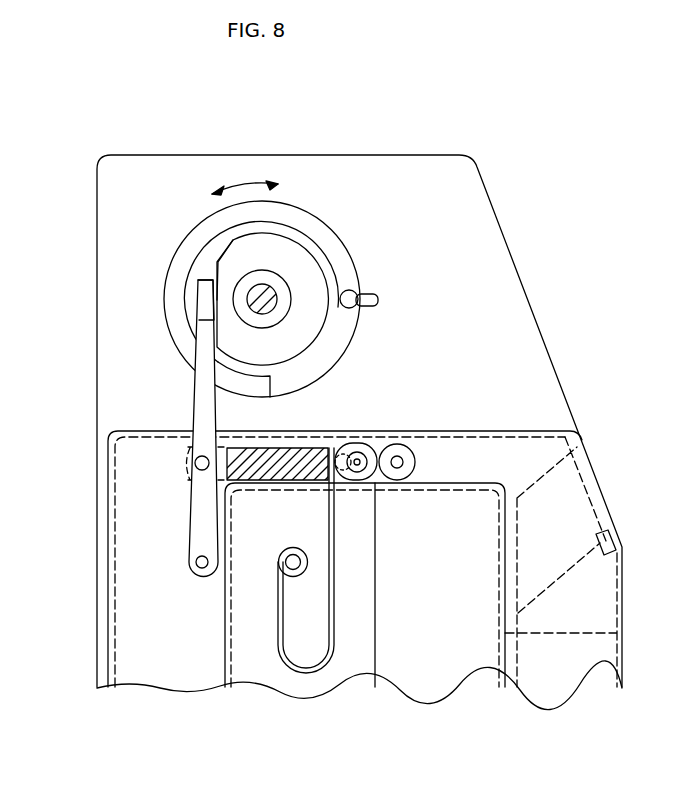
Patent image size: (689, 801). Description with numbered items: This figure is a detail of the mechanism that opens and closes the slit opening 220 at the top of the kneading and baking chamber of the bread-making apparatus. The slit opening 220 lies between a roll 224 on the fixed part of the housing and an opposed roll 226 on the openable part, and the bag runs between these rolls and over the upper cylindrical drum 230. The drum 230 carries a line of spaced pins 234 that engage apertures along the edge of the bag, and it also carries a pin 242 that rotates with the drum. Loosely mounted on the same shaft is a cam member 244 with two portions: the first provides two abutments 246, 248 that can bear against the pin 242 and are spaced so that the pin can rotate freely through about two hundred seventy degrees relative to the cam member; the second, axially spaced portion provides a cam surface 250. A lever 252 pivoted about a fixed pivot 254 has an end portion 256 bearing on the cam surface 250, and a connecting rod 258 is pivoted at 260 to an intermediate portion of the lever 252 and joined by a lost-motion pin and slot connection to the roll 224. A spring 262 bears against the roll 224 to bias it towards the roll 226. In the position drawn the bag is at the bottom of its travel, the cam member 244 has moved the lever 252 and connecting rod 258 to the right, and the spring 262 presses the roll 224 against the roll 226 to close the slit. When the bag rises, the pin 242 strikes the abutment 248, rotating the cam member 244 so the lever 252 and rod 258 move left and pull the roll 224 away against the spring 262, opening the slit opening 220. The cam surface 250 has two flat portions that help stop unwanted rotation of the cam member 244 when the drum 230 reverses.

The slit opening 220 is at (381, 440).
The roll on the fixed part 224 is at (376, 443).
The roll on the openable part 226 is at (393, 432).
The upper cylindrical drum 230 is at (333, 228).
The pins 234 is at (380, 298).
The pin 242 is at (345, 292).
The cam member 244 is at (295, 231).
The abutment 246 is at (352, 308).
The abutment 248 is at (273, 390).
The cam surface 250 is at (223, 255).
The lever 252 is at (207, 388).
The fixed pivot 254 is at (197, 563).
The end portion 256 is at (210, 294).
The connecting rod 258 is at (297, 478).
The pivot 260 is at (196, 465).
The spring 262 is at (334, 625).